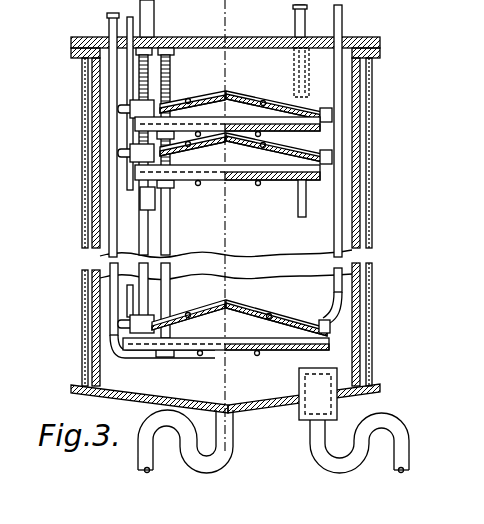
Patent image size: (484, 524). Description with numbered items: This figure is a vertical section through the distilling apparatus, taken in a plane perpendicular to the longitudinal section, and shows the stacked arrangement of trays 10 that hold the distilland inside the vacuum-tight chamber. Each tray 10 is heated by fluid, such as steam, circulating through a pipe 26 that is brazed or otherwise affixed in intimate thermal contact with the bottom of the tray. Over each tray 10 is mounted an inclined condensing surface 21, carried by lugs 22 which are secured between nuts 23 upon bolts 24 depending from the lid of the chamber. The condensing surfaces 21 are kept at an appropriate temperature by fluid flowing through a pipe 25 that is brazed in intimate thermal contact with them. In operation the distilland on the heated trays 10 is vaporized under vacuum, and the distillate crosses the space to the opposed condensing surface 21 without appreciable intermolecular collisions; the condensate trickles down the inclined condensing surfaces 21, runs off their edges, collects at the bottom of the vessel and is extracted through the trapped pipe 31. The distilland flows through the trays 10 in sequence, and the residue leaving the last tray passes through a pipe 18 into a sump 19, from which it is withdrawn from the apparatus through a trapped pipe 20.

The tray 10 is at (332, 140).
The pipe 18 is at (337, 365).
The sump 19 is at (340, 401).
The trapped pipe 20 is at (402, 471).
The inclined condensing surface 21 is at (224, 83).
The lug 22 is at (166, 88).
The nut 23 is at (120, 108).
The bolt 24 is at (140, 226).
The pipe 25 is at (149, 27).
The pipe 26 is at (203, 193).
The trapped pipe 31 is at (233, 440).